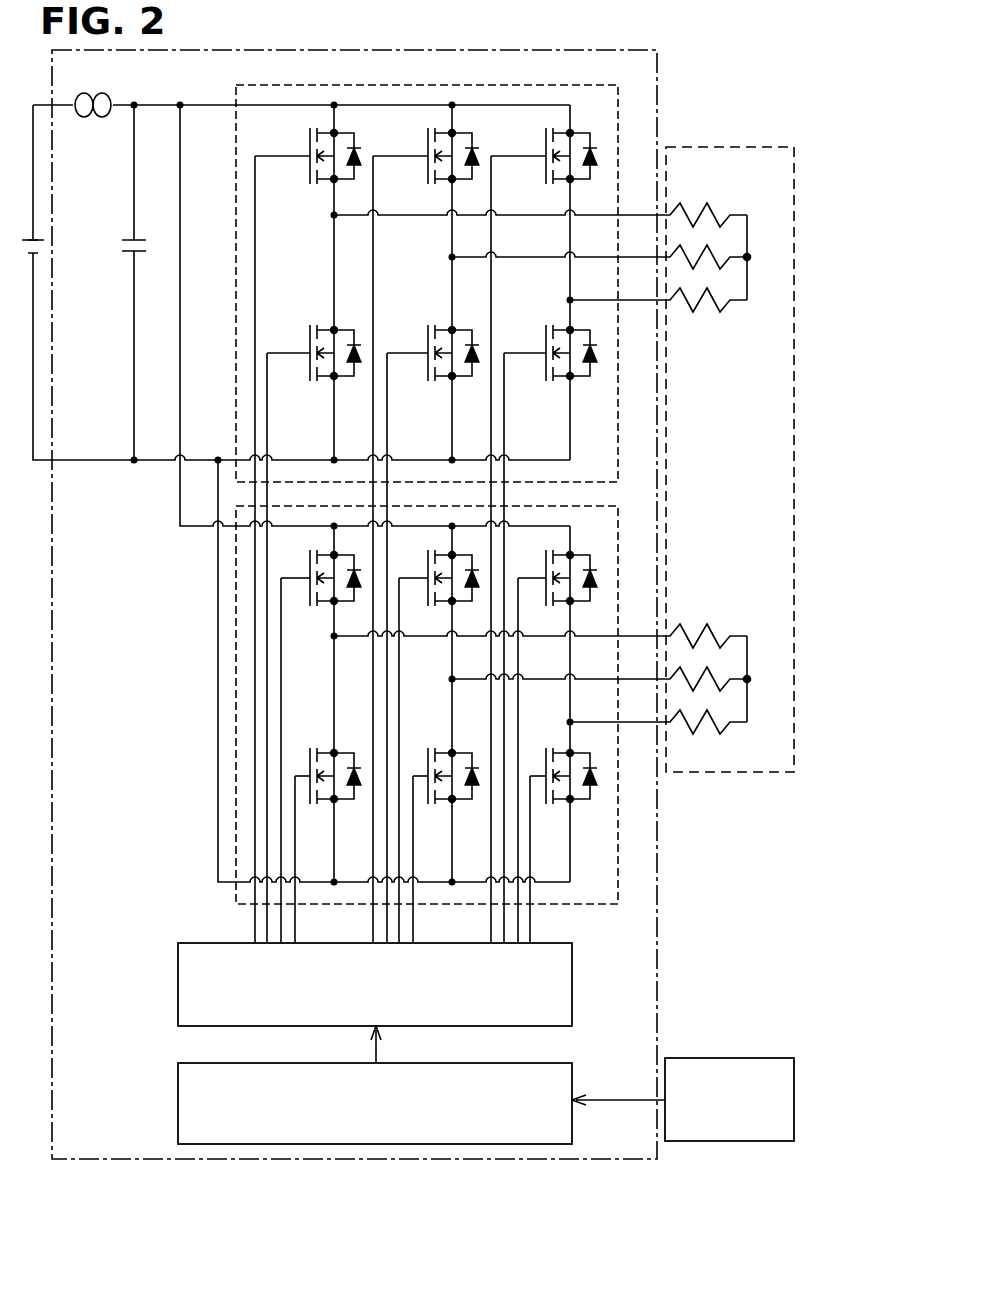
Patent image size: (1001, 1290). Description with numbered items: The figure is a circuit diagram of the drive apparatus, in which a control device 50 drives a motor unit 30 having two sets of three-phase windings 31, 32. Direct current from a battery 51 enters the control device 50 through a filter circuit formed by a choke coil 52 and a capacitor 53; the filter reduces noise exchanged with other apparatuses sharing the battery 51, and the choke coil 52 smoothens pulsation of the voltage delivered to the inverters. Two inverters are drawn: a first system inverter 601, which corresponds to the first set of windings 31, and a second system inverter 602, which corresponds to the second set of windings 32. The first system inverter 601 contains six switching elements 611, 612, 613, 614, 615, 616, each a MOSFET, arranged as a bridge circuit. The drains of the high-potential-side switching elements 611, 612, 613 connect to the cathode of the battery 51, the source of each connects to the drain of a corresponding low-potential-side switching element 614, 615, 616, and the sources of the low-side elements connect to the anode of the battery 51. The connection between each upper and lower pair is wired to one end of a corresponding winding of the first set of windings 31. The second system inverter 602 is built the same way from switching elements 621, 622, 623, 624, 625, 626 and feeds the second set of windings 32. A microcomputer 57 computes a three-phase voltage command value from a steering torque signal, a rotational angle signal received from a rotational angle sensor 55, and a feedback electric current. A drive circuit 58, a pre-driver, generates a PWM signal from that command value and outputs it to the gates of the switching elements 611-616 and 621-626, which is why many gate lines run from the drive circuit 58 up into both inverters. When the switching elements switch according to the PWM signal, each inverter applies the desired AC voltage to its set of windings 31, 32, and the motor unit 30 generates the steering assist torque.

The motor unit 30 is at (750, 146).
The first set of windings 31 is at (714, 346).
The second set of windings 32 is at (719, 588).
The control device 50 is at (657, 101).
The battery 51 is at (32, 239).
The choke coil 52 is at (94, 93).
The capacitor 53 is at (132, 239).
The rotational angle sensor 55 is at (731, 1058).
The microcomputer 57 is at (178, 1105).
The drive circuit 58 is at (178, 990).
The first system inverter 601 is at (356, 84).
The second system inverter 602 is at (232, 894).
The switching element 611 is at (355, 142).
The switching element 612 is at (473, 142).
The switching element 613 is at (578, 131).
The switching element 614 is at (346, 327).
The switching element 615 is at (464, 327).
The switching element 616 is at (560, 322).
The switching element 621 is at (327, 553).
The switching element 622 is at (445, 553).
The switching element 623 is at (581, 553).
The switching element 624 is at (346, 750).
The switching element 625 is at (463, 750).
The switching element 626 is at (558, 750).